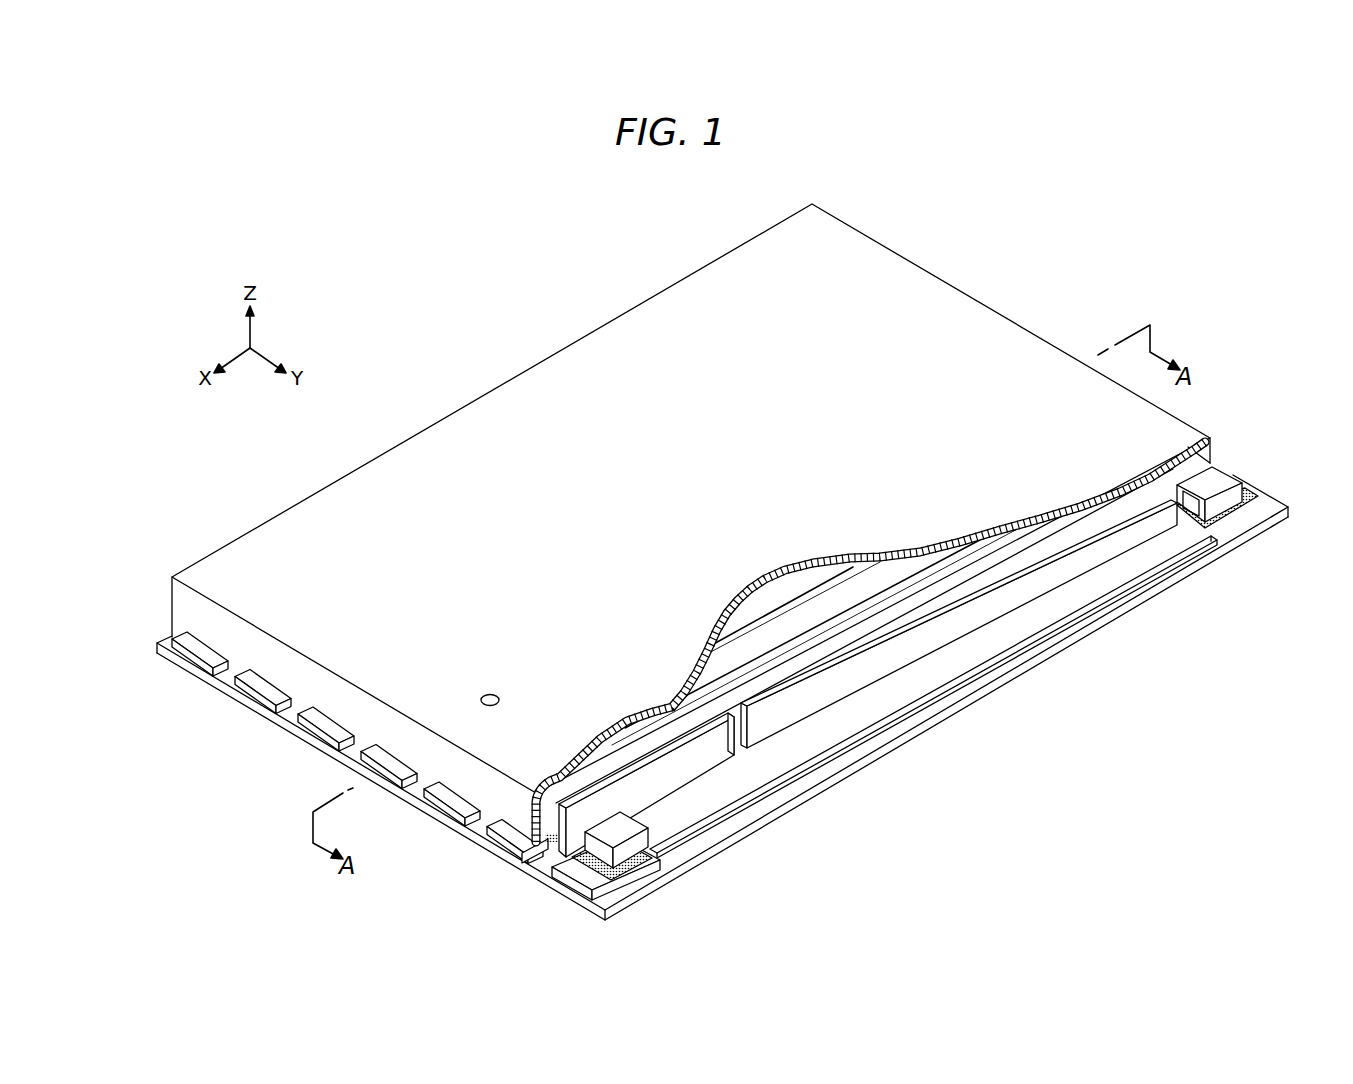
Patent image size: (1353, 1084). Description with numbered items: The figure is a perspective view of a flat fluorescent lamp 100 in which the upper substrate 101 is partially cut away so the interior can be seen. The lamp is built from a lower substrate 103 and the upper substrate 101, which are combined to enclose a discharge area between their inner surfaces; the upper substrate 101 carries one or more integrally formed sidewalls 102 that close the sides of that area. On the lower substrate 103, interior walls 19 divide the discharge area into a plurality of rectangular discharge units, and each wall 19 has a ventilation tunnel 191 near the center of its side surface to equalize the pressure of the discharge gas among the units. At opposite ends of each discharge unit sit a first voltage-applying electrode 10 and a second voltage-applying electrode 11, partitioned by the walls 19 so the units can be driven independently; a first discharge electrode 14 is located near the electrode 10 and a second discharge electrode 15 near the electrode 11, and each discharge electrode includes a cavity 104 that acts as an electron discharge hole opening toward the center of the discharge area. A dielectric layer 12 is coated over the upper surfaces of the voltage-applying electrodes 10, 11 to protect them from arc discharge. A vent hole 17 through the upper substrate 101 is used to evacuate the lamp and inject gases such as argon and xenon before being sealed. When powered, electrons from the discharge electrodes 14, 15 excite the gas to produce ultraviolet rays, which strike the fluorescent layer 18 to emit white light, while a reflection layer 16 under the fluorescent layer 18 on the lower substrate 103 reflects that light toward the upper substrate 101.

The flat fluorescent lamp 100 is at (661, 523).
The upper substrate 101 is at (437, 422).
The sidewall 102 is at (180, 610).
The lower substrate 103 is at (968, 706).
The cavity 104 is at (1188, 522).
The first voltage-applying electrode 10 is at (575, 875).
The second voltage-applying electrode 11 is at (739, 693).
The dielectric layer 12 is at (633, 875).
The first discharge electrode 14 is at (607, 853).
The second discharge electrode 15 is at (1233, 472).
The reflection layer 16 is at (1055, 637).
The vent hole 17 is at (486, 705).
The fluorescent layer 18 is at (1195, 440).
The interior wall 19 is at (866, 670).
The ventilation tunnel 191 is at (745, 745).